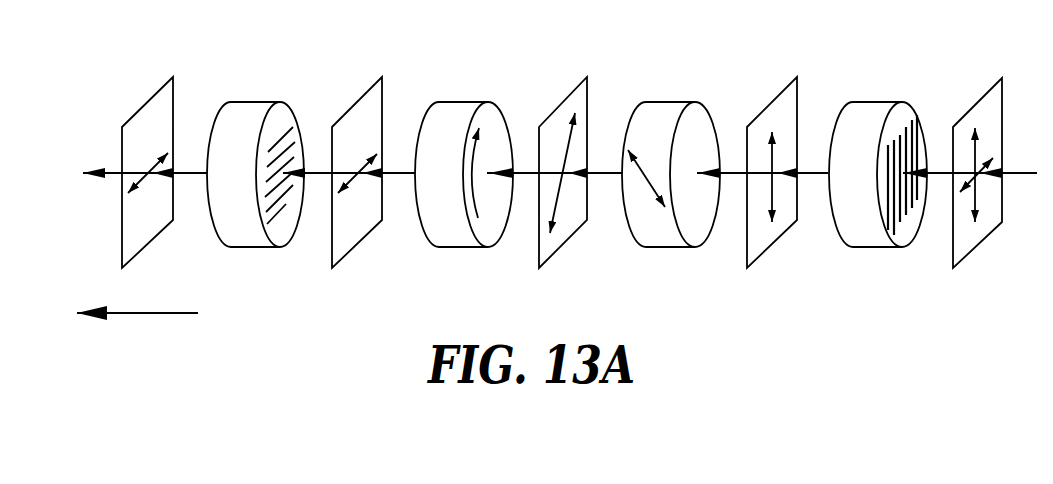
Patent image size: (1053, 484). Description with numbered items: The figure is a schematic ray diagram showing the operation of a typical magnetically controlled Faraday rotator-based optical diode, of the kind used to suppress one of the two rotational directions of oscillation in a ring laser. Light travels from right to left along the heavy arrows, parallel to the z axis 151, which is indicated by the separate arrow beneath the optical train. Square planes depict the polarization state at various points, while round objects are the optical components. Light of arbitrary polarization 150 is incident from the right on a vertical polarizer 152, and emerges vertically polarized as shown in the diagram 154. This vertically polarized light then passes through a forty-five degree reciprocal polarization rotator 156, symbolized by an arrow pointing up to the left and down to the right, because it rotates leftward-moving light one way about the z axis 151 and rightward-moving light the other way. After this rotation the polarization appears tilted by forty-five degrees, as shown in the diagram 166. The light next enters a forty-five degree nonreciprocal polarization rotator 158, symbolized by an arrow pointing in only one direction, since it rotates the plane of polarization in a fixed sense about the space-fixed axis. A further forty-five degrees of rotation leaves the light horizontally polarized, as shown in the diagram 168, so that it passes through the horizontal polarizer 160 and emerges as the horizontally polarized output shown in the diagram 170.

The light of arbitrary polarization 150 is at (972, 108).
The z axis 151 is at (133, 313).
The vertical polarizer 152 is at (858, 112).
The vertically polarized light 154 is at (770, 104).
The reciprocal polarization rotator 156 is at (658, 113).
The nonreciprocal polarization rotator 158 is at (443, 117).
The horizontal polarizer 160 is at (238, 113).
The polarization state diagram after reciprocal rotator 166 is at (557, 108).
The polarization state diagram after nonreciprocal rotator 168 is at (355, 104).
The polarization state diagram after horizontal polarizer 170 is at (152, 97).